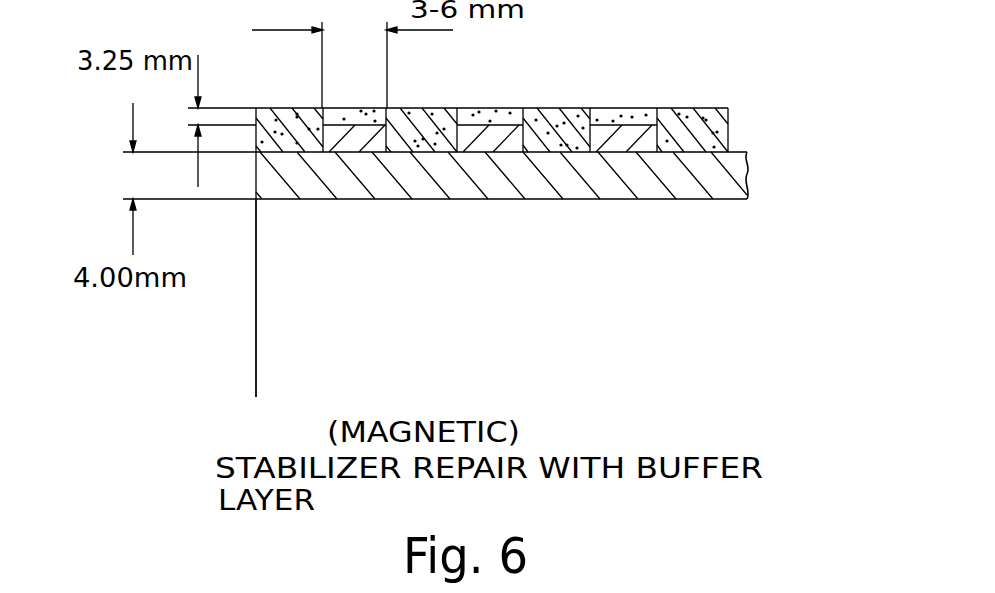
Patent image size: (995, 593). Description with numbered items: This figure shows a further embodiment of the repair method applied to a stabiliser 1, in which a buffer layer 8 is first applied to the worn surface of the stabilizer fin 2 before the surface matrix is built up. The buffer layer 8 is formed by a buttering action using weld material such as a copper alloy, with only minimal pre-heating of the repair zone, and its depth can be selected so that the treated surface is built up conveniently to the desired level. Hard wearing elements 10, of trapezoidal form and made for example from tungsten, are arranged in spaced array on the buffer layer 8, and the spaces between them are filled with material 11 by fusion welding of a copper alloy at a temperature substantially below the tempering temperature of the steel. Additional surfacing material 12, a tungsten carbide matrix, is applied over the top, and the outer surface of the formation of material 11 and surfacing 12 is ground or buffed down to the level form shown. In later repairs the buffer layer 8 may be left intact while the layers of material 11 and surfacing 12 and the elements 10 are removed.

The stabiliser tool 1 is at (226, 356).
The stabilizer fin 2 is at (347, 297).
The buffer layer 8 is at (298, 176).
The hard wearing elements 10 is at (295, 117).
The filling material 11 is at (595, 152).
The surfacing material 12 is at (362, 125).